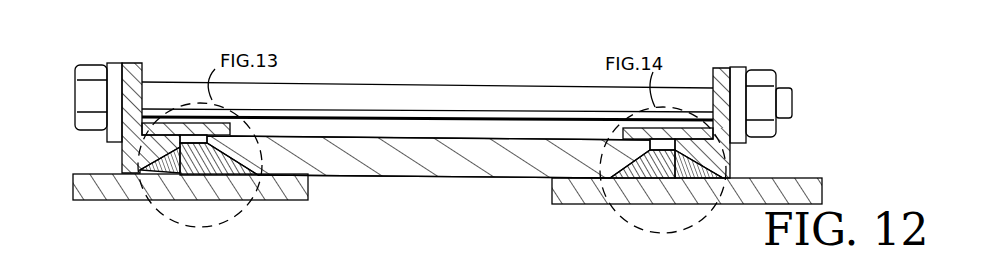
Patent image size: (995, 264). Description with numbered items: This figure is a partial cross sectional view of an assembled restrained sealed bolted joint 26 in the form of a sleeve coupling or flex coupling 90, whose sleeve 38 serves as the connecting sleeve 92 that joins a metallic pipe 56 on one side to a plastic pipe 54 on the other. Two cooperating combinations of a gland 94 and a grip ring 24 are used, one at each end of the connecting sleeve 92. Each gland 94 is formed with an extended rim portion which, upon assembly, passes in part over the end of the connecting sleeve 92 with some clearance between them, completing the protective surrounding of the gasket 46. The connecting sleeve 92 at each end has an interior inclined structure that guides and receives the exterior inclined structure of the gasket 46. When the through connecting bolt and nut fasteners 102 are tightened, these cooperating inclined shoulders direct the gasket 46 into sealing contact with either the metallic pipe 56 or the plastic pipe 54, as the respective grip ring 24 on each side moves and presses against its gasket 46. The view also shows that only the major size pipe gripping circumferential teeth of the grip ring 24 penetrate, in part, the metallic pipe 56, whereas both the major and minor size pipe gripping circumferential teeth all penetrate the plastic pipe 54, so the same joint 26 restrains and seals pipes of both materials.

The through connecting bolt and nut fasteners 102 is at (342, 85).
The gland 94 is at (140, 63).
The restrained sealed bolted joint 26 is at (735, 163).
The sleeve 38 is at (410, 138).
The connecting sleeve 92 is at (477, 138).
The flex coupling 90 is at (538, 137).
The metallic pipe 56 is at (310, 195).
The plastic pipe 54 is at (548, 193).
The grip ring 24 is at (165, 174).
The gasket 46 is at (203, 174).